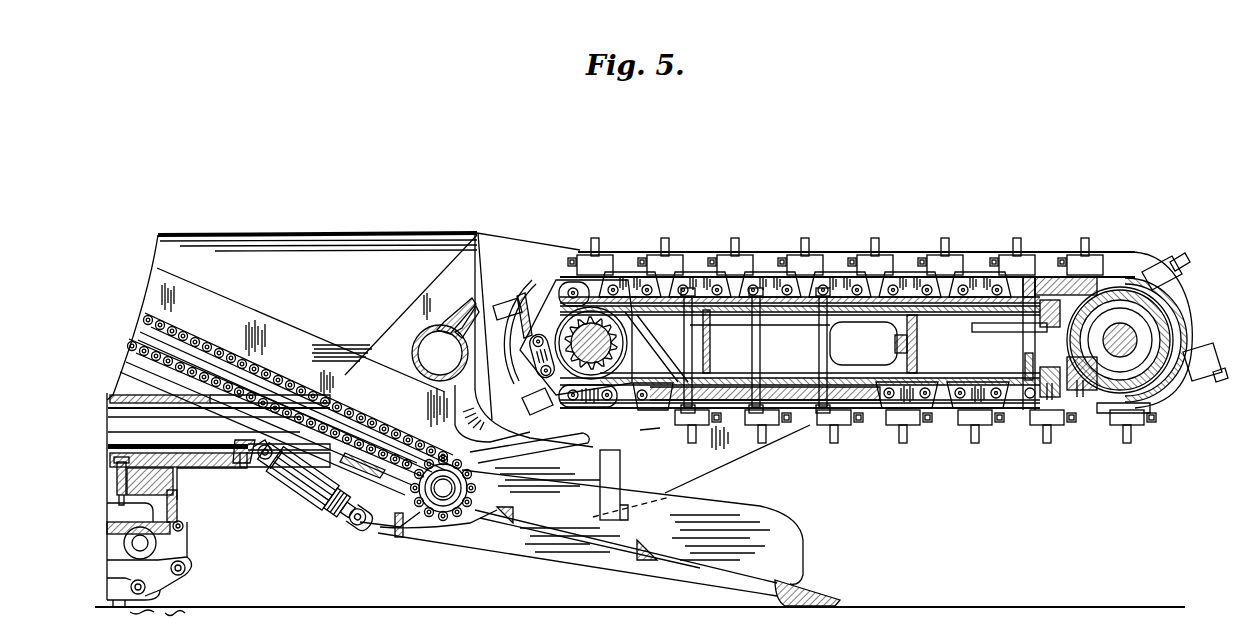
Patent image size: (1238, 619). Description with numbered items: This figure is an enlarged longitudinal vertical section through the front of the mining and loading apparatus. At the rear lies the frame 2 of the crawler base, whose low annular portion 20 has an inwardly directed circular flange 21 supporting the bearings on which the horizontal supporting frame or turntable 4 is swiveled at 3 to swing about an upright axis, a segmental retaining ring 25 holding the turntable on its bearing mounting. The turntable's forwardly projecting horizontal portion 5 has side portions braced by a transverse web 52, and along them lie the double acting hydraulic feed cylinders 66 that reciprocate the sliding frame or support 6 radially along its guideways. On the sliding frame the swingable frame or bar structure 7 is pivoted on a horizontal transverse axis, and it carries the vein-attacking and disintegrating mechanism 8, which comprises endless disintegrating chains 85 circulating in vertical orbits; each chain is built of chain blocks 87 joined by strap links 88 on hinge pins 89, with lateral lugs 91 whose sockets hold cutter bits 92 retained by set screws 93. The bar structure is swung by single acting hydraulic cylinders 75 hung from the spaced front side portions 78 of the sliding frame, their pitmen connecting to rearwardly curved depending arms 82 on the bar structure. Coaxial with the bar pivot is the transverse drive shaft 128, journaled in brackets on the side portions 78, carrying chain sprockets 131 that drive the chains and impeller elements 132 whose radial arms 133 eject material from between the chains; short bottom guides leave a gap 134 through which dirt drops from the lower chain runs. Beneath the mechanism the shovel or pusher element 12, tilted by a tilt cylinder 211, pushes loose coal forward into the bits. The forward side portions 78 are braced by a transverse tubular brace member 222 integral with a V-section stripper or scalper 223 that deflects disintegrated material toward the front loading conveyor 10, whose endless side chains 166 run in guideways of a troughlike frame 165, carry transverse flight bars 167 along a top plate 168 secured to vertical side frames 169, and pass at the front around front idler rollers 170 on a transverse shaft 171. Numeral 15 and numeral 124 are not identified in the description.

The frame 2 is at (167, 516).
The swivel 3 is at (175, 482).
The horizontal supporting frame or turntable 4 is at (162, 457).
The horizontal portion 5 is at (246, 468).
The sliding frame or support 6 is at (476, 408).
The swingable frame or bar structure 7 is at (693, 260).
The vein-attacking and disintegrating mechanism 8 is at (1032, 239).
The front loading conveyor 10 is at (200, 343).
The shovel or material pushing element 12 is at (790, 545).
The pivot bracket 15 is at (162, 582).
The annular portion 20 is at (186, 493).
The circular flange 21 is at (143, 470).
The segmental retaining ring 25 is at (185, 526).
The transverse horizontal portion or web 52 is at (215, 456).
The hydraulic feed cylinders 66 is at (162, 410).
The hydraulic cylinders 75 is at (593, 440).
The front side portions 78 is at (517, 246).
The depending arms 82 is at (735, 450).
The endless disintegrating chains 85 is at (877, 270).
The chain blocks 87 is at (828, 275).
The strap links 88 is at (557, 293).
The hinge pins 89 is at (605, 313).
The lugs 91 is at (942, 243).
The cutter bits 92 is at (836, 442).
The set screws 93 is at (996, 416).
The drive wheel housing 124 is at (1118, 253).
The transverse drive shaft 128 is at (594, 322).
The chain sprockets 131 is at (666, 283).
The impeller elements 132 is at (682, 262).
The radial arms 133 is at (658, 428).
The open space or gap 134 is at (943, 412).
The troughlike frame 165 is at (165, 288).
The endless side chains 166 is at (252, 367).
The transverse flight bars 167 is at (273, 375).
The top plate 168 is at (162, 333).
The vertical side frames 169 is at (254, 330).
The front idler rollers 170 is at (437, 512).
The transverse shaft 171 is at (462, 515).
The tilt cylinder 211 is at (296, 498).
The transverse tubular brace member 222 is at (428, 336).
The stripper or scalper 223 is at (473, 302).